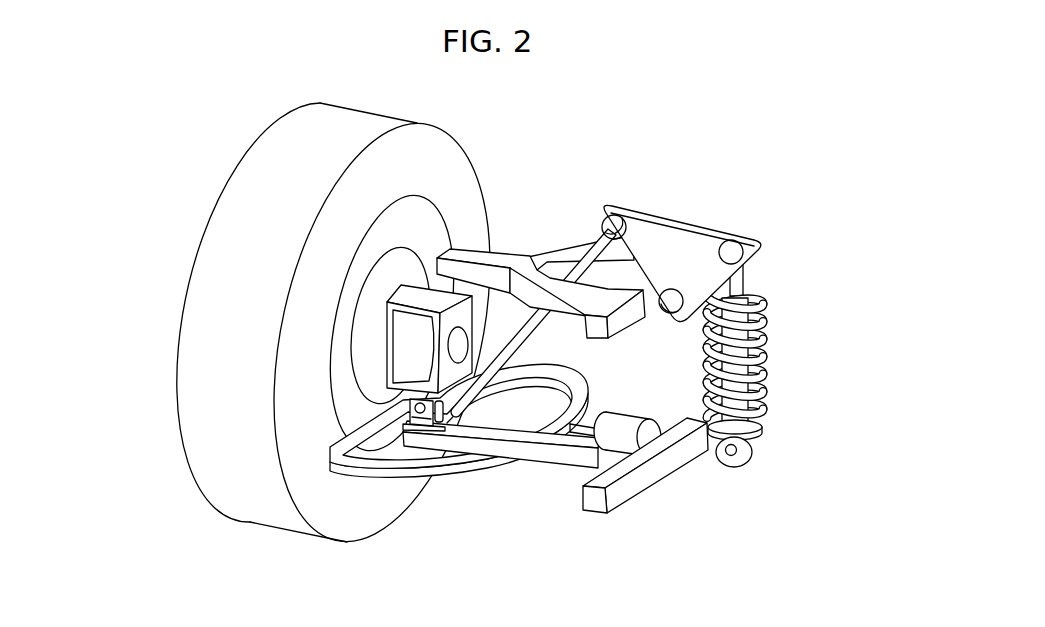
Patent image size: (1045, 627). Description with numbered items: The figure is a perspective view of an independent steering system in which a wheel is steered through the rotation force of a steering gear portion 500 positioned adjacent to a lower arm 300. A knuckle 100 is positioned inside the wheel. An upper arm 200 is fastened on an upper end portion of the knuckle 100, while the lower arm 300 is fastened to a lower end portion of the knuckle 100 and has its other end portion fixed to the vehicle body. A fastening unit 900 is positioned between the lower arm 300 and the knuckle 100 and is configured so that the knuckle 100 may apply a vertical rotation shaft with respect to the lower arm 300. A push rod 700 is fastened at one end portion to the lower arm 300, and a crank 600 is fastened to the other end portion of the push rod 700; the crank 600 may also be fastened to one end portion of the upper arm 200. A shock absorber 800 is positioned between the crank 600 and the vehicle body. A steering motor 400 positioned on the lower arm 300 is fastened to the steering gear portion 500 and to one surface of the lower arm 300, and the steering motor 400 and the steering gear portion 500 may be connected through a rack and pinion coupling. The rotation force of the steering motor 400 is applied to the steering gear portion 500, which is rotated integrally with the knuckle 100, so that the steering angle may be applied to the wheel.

The knuckle 100 is at (402, 343).
The upper arm 200 is at (557, 281).
The lower arm 300 is at (618, 493).
The steering motor 400 is at (645, 438).
The steering gear portion 500 is at (477, 462).
The crank 600 is at (676, 238).
The push rod 700 is at (527, 322).
The shock absorber 800 is at (747, 387).
The fastening unit 900 is at (403, 430).